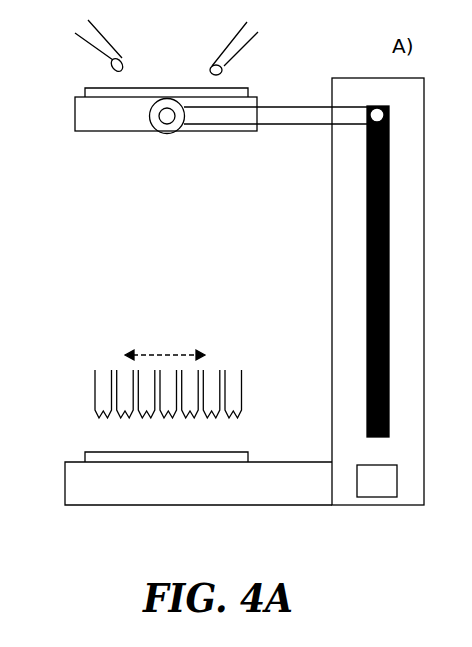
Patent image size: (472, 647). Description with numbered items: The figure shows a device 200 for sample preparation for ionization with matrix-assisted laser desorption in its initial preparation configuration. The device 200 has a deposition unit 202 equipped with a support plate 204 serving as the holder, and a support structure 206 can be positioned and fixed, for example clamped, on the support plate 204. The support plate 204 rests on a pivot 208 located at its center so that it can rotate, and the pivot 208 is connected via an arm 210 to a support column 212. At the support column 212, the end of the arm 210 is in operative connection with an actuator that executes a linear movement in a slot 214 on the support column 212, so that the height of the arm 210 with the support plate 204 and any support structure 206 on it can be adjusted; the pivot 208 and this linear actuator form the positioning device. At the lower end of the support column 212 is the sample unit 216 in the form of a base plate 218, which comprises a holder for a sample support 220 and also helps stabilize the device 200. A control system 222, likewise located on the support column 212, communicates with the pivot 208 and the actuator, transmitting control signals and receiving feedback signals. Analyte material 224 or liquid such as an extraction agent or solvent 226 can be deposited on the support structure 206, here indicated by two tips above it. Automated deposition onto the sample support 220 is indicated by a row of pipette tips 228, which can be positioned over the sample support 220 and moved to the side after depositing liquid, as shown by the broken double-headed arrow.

The device for sample preparation 200 is at (337, 558).
The deposition unit 202 is at (98, 183).
The support plate 204 is at (166, 114).
The support structure 206 is at (166, 81).
The pivot 208 is at (168, 128).
The arm 210 is at (275, 129).
The support column 212 is at (378, 291).
The slot 214 is at (367, 256).
The sample unit 216 is at (93, 317).
The base plate 218 is at (198, 484).
The sample support 220 is at (188, 449).
The control system 222 is at (379, 480).
The analyte material 224 is at (223, 70).
The extraction agent or solvent 226 is at (112, 70).
The row of pipette tips 228 is at (204, 367).